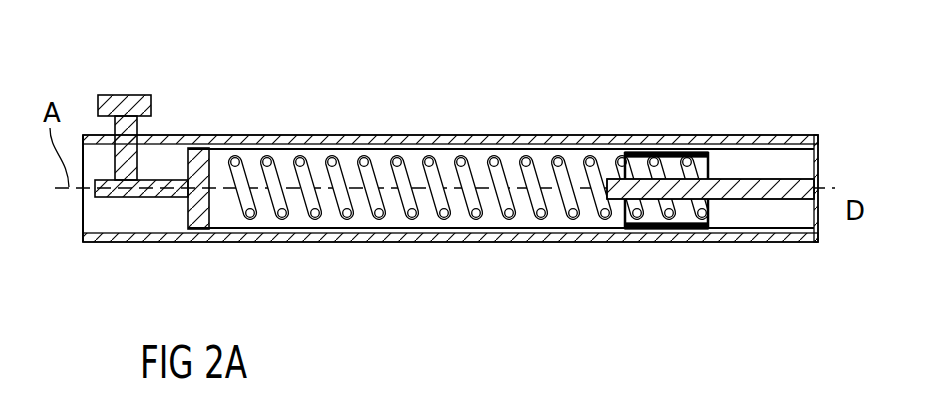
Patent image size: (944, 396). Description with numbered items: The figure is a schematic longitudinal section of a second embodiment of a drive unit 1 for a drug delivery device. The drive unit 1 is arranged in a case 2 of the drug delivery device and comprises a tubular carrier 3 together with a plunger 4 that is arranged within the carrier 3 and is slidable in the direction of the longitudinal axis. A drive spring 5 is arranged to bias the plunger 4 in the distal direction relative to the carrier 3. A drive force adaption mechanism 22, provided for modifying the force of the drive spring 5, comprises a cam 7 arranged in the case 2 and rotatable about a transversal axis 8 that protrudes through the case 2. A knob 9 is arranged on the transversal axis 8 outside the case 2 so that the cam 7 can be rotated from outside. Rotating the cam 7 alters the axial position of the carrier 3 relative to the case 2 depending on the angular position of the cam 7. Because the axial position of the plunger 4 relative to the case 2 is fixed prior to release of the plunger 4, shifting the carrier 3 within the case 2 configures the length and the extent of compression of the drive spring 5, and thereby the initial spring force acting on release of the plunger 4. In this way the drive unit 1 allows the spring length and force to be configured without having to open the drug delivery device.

The drive unit 1 is at (647, 134).
The case 2 is at (348, 136).
The tubular carrier 3 is at (458, 152).
The plunger 4 is at (725, 195).
The drive spring 5 is at (557, 160).
The cam 7 is at (166, 197).
The transversal axis 8 is at (130, 150).
The knob 9 is at (108, 95).
The drive force adaption mechanism 22 is at (129, 216).